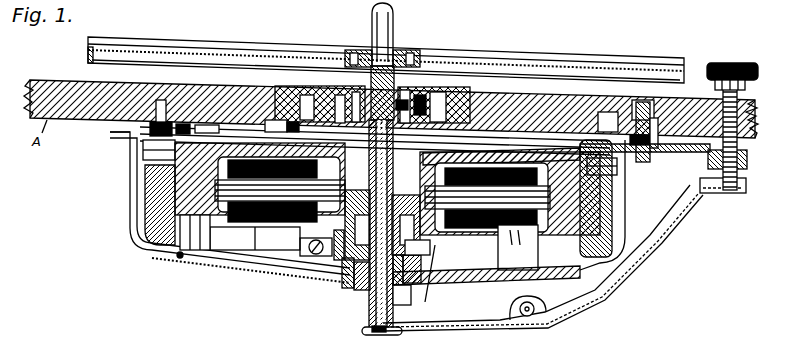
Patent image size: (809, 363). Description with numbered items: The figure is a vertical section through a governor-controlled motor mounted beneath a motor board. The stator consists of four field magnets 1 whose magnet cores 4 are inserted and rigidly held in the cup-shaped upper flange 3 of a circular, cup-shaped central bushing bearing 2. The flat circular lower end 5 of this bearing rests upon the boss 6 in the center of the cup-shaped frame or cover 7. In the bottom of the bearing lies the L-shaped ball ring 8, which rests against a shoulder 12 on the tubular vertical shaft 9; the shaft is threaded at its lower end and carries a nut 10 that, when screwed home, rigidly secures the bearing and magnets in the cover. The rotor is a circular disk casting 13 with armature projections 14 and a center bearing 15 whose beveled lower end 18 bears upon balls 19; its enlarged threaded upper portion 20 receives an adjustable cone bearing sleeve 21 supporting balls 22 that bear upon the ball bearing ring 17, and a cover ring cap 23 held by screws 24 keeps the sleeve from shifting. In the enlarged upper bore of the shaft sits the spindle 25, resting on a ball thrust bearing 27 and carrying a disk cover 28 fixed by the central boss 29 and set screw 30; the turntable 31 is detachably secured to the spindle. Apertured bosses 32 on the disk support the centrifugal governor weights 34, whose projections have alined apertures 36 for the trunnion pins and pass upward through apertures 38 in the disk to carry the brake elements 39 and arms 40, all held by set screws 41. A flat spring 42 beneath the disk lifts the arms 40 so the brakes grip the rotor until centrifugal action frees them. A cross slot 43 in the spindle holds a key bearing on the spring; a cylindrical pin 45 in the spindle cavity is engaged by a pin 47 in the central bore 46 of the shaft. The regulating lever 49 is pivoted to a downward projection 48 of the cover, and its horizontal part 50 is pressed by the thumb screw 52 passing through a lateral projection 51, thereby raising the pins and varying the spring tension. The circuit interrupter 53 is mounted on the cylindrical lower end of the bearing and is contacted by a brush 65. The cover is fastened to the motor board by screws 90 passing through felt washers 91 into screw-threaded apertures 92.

The field magnets 1 is at (515, 223).
The central bushing bearing 2 is at (423, 240).
The cup-shaped upper flange 3 is at (432, 218).
The magnet cores 4 is at (260, 234).
The flat circular lower end 5 is at (420, 285).
The boss 6 is at (210, 248).
The cup-shaped frame or cover 7 is at (470, 286).
The ball ring 8 is at (348, 292).
The vertical shaft 9 is at (360, 292).
The nut 10 is at (365, 302).
The shoulder 12 is at (348, 263).
The circular disk casting 13 is at (268, 125).
The armature projections 14 is at (143, 189).
The center bearing 15 is at (333, 263).
The ball bearing ring 17 is at (347, 118).
The beveled cone-shaped lower end 18 is at (423, 242).
The balls 19 is at (425, 283).
The enlarged screw-threaded portion 20 is at (442, 115).
The adjustable cone bearing sleeve 21 is at (425, 110).
The balls 22 is at (308, 95).
The cover ring cap 23 is at (440, 100).
The screws 24 is at (300, 95).
The spindle 25 is at (394, 42).
The ball thrust bearing 27 is at (338, 95).
The disk cover 28 is at (290, 120).
The central boss 29 is at (356, 93).
The set screw 30 is at (407, 110).
The turntable 31 is at (617, 67).
The apertured bosses 32 is at (613, 117).
The centrifugal governor weights 34 is at (157, 219).
The alined apertures 36 is at (190, 125).
The apertures 38 is at (215, 125).
The brake elements 39 is at (140, 150).
The arms 40 is at (235, 125).
The set screws 41 is at (160, 120).
The flat spring 42 is at (270, 120).
The horizontal cross slot 43 is at (418, 68).
The cylindrical pin 45 is at (422, 95).
The central bore 46 is at (396, 305).
The pin 47 is at (386, 330).
The downward projection 48 is at (545, 295).
The regulating lever 49 is at (582, 310).
The horizontal part 50 is at (718, 193).
The lateral projection 51 is at (747, 160).
The thumb screw 52 is at (740, 97).
The circuit interrupter 53 is at (467, 284).
The brush 65 is at (307, 257).
The screws 90 is at (653, 115).
The felt washers 91 is at (673, 117).
The screw-threaded apertures 92 is at (647, 158).